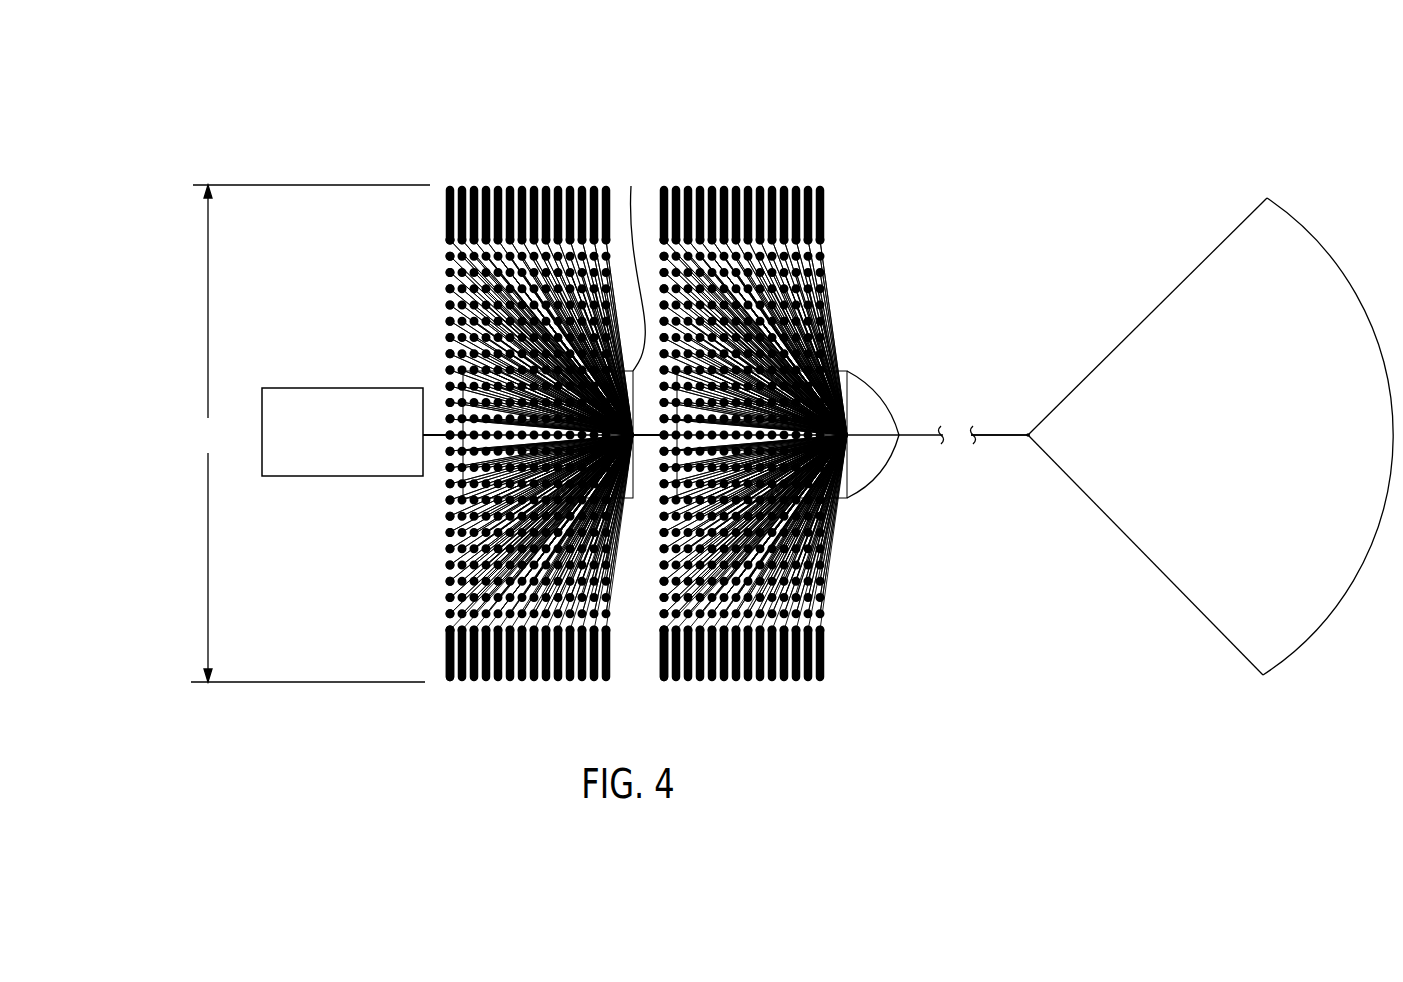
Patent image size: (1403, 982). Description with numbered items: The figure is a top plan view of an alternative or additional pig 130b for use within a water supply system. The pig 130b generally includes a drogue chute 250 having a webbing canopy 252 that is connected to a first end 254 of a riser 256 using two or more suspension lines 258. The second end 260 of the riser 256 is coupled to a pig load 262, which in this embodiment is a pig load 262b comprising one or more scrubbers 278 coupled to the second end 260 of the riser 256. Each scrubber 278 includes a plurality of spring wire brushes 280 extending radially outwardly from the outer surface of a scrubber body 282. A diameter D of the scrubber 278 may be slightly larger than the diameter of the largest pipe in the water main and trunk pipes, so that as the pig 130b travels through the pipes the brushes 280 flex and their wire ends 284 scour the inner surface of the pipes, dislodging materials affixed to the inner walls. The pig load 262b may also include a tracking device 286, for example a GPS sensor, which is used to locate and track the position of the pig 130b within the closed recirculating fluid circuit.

The pig 130b is at (1088, 128).
The drogue chute 250 is at (1182, 471).
The webbing canopy 252 is at (1323, 603).
The first end of riser 254 is at (1018, 424).
The riser 256 is at (1000, 432).
The suspension lines 258 is at (1168, 280).
The second end of riser 260 is at (898, 410).
The pig load 262 is at (891, 214).
The pig load 262b is at (853, 492).
The scrubbers 278 is at (515, 176).
The spring wire brushes 280 is at (438, 671).
The scrubber body 282 is at (883, 358).
The wire ends 284 is at (438, 504).
The tracking device 286 is at (337, 378).
The diameter of scrubber D is at (310, 433).